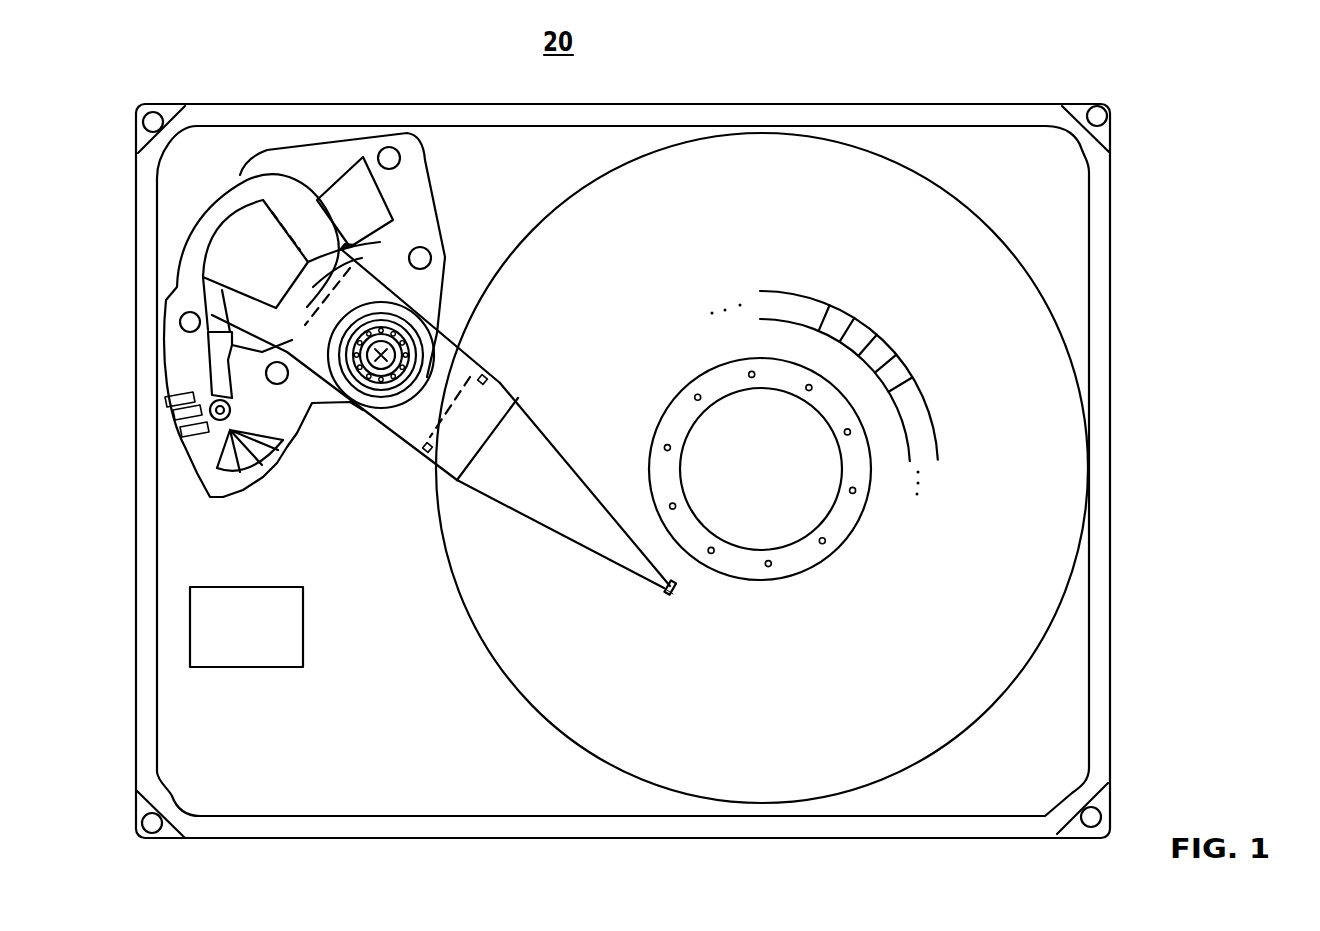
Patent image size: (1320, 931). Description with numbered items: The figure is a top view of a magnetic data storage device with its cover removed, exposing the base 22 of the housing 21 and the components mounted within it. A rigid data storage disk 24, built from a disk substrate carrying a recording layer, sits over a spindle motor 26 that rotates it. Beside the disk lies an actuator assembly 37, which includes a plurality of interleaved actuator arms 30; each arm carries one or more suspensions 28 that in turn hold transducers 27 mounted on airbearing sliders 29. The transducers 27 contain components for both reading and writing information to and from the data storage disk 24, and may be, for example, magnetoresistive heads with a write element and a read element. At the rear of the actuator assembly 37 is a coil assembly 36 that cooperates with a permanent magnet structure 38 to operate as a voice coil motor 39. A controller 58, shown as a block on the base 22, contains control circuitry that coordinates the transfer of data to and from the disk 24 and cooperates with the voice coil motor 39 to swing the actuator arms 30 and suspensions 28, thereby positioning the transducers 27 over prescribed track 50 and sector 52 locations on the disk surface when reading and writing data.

The housing 21 is at (451, 832).
The base 22 is at (311, 830).
The rigid data storage disk 24 is at (810, 236).
The spindle motor 26 is at (810, 512).
The transducer 27 is at (680, 594).
The suspension 28 is at (523, 493).
The airbearing slider 29 is at (660, 597).
The actuator arm 30 is at (395, 432).
The coil assembly 36 is at (252, 193).
The actuator assembly 37 is at (340, 440).
The permanent magnet structure 38 is at (407, 187).
The voice coil motor 39 is at (350, 248).
The track 50 is at (935, 460).
The sector 52 is at (893, 363).
The controller 58 is at (237, 627).